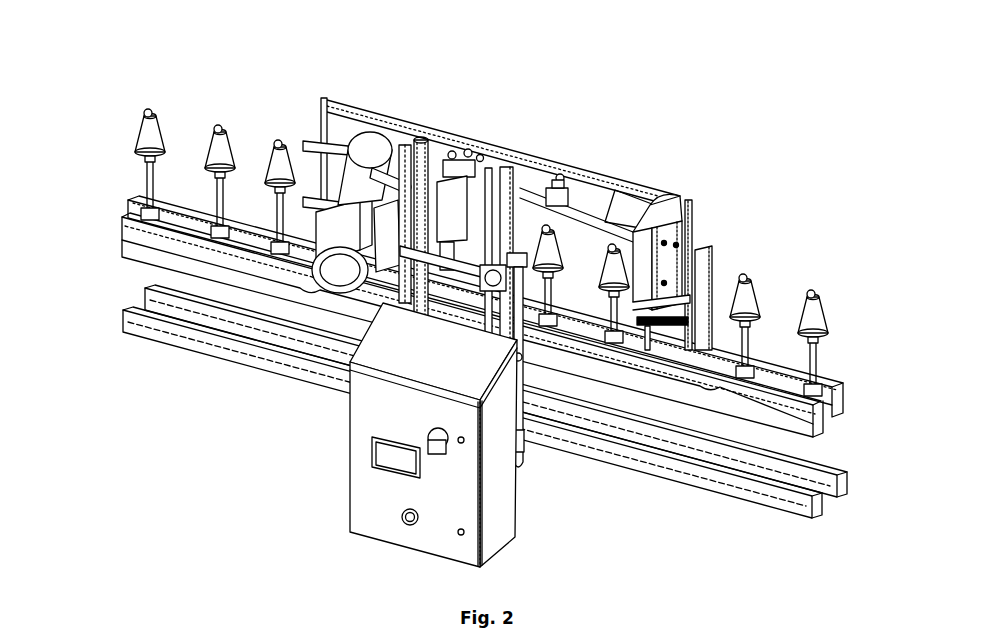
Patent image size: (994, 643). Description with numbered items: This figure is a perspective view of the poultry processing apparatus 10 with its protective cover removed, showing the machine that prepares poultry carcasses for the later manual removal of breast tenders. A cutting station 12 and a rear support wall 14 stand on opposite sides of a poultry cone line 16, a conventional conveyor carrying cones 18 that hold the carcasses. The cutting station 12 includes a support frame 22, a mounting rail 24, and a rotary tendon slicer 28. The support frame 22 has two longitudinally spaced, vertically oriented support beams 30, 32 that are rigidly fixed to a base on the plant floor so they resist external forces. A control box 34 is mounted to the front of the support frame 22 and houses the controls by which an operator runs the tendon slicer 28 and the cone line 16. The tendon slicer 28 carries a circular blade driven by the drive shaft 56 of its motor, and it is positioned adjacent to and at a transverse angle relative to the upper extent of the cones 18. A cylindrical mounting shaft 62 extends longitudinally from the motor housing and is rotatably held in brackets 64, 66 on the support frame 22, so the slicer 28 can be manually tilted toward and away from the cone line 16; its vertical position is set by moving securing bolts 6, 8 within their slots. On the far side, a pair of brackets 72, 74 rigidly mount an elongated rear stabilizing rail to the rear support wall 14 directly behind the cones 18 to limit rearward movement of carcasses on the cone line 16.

The securing bolt 6 is at (521, 448).
The securing bolt 8 is at (517, 357).
The poultry processing apparatus 10 is at (790, 147).
The cutting station 12 is at (527, 217).
The rear support wall 14 is at (648, 208).
The poultry cone line 16 is at (137, 261).
The cones 18 is at (280, 177).
The support frame 22 is at (424, 150).
The mounting rail 24 is at (317, 157).
The rotary tendon slicer 28 is at (358, 155).
The support beam 30 is at (408, 163).
The support beam 32 is at (503, 177).
The control box 34 is at (360, 497).
The drive shaft 56 is at (387, 180).
The cylindrical mounting shaft 62 is at (447, 260).
The bracket 64 is at (393, 252).
The bracket 66 is at (481, 280).
The bracket 72 is at (460, 157).
The bracket 74 is at (553, 197).